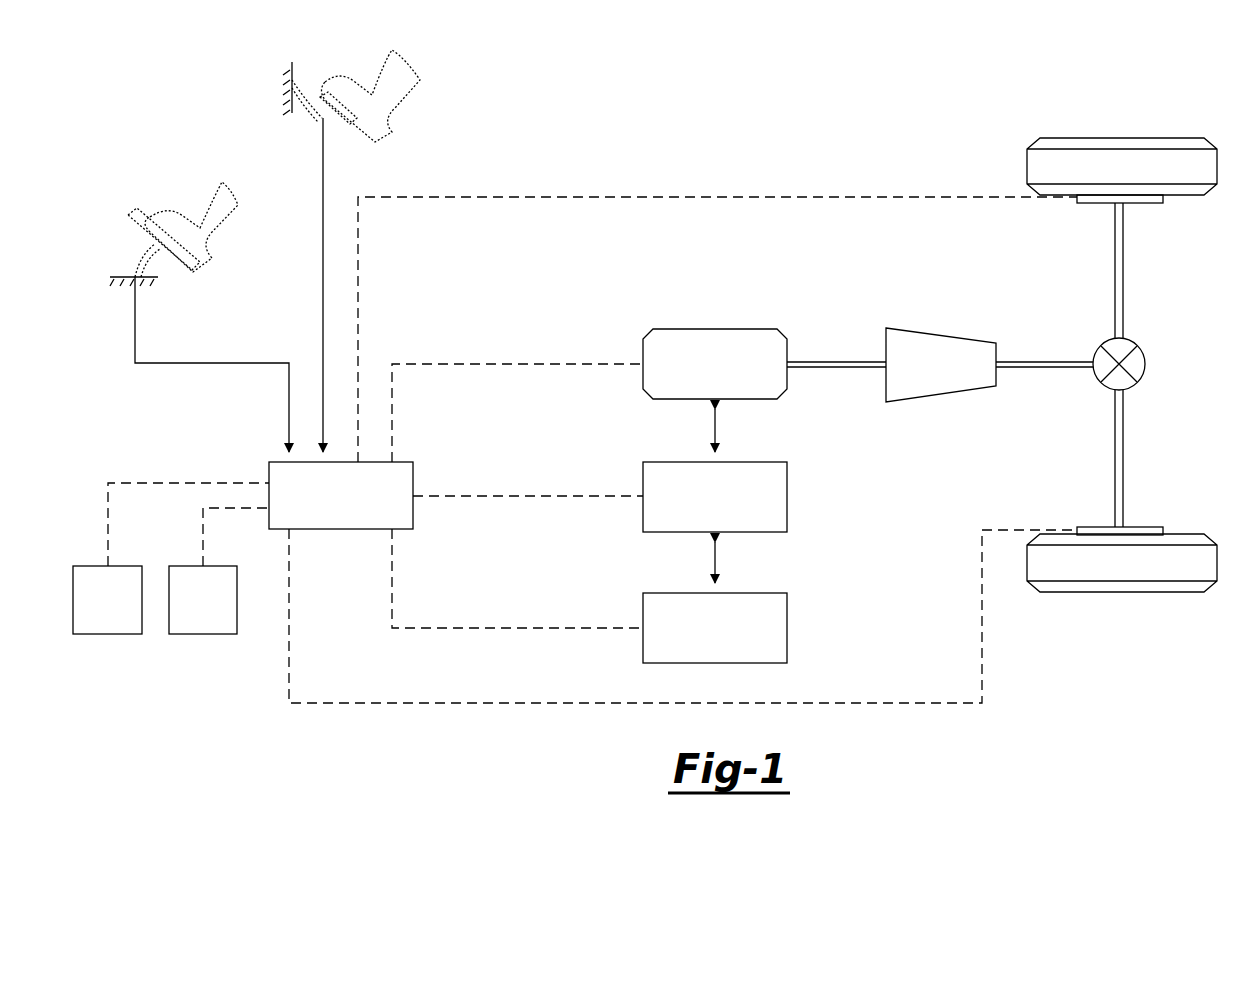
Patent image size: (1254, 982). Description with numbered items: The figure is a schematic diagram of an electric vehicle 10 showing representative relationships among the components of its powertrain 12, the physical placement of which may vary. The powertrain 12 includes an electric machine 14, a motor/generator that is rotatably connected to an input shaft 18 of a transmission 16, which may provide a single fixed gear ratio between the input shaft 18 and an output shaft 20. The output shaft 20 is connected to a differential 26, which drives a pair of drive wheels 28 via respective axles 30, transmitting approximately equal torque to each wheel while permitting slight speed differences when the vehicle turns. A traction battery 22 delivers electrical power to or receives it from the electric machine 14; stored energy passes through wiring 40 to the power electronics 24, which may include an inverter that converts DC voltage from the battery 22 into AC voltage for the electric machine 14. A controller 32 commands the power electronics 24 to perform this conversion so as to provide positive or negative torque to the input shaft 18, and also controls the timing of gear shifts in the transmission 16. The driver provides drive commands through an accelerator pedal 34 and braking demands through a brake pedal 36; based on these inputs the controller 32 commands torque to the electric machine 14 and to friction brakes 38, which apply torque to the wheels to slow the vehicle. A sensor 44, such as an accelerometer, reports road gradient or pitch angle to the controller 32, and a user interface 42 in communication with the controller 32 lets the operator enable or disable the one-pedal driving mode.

The electric vehicle 10 is at (968, 64).
The powertrain 12 is at (628, 298).
The electric machine 14 is at (713, 329).
The transmission 16 is at (942, 330).
The input shaft 18 is at (835, 361).
The output shaft 20 is at (1042, 358).
The traction battery 22 is at (787, 628).
The power electronics 24 is at (787, 497).
The differential 26 is at (1147, 362).
The drive wheels 28 is at (1121, 137).
The axles 30 is at (1123, 270).
The controller 32 is at (342, 530).
The accelerator pedal 34 is at (166, 168).
The brake pedal 36 is at (345, 40).
The friction brakes 38 is at (1165, 198).
The wiring 40 is at (718, 563).
The user interface 42 is at (108, 634).
The sensor 44 is at (203, 634).